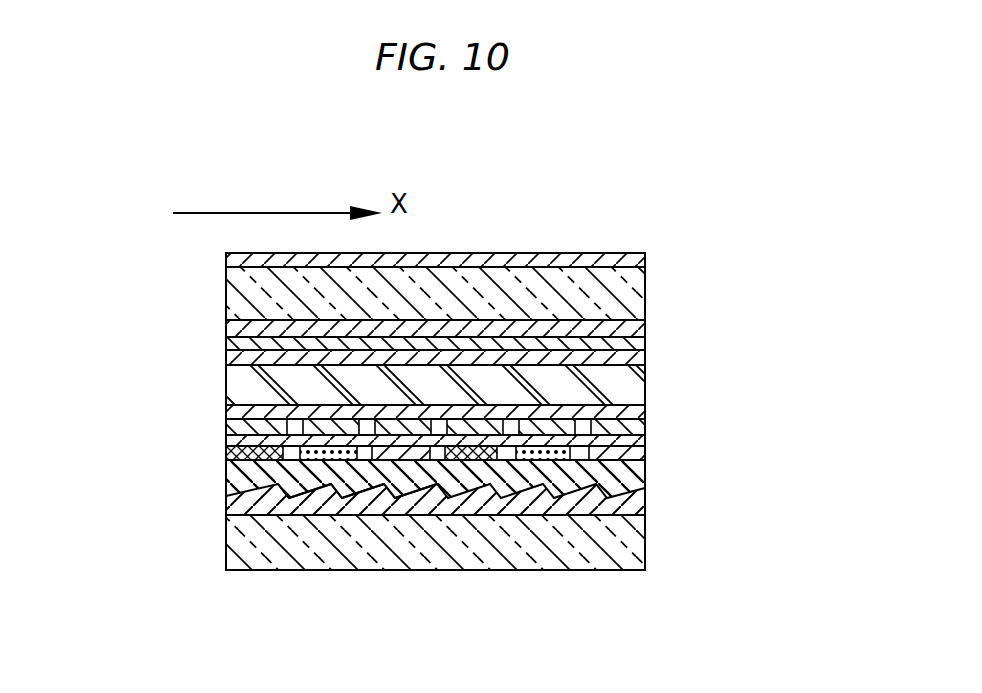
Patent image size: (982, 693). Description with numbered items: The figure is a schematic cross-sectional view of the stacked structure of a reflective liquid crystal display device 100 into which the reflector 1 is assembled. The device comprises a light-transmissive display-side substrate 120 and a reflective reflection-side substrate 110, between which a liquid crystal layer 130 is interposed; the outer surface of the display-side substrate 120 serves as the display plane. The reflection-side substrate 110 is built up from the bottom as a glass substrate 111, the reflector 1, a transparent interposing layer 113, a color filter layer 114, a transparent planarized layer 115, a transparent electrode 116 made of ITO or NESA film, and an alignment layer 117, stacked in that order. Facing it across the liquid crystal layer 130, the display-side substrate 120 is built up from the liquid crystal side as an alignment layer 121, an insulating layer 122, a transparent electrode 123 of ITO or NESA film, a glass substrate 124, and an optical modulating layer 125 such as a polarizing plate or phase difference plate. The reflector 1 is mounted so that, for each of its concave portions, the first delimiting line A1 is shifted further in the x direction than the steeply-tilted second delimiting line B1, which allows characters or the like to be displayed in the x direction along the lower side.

The reflective liquid crystal display device 100 is at (514, 222).
The reflection-side substrate 110 is at (122, 340).
The glass substrate 111 is at (226, 543).
The reflector 1 is at (226, 503).
The transparent interposing layer 113 is at (226, 471).
The color filter layer 114 is at (226, 457).
The transparent planarized layer 115 is at (226, 441).
The transparent electrode 116 is at (226, 428).
The alignment layer 117 is at (226, 412).
The display-side substrate 120 is at (750, 217).
The alignment layer 121 is at (645, 358).
The insulating layer 122 is at (645, 343).
The transparent electrode 123 is at (645, 328).
The glass substrate 124 is at (645, 290).
The optical modulating layer 125 is at (645, 260).
The liquid crystal layer 130 is at (645, 390).
The first delimiting line A1 is at (331, 492).
The second delimiting line B1 is at (278, 492).